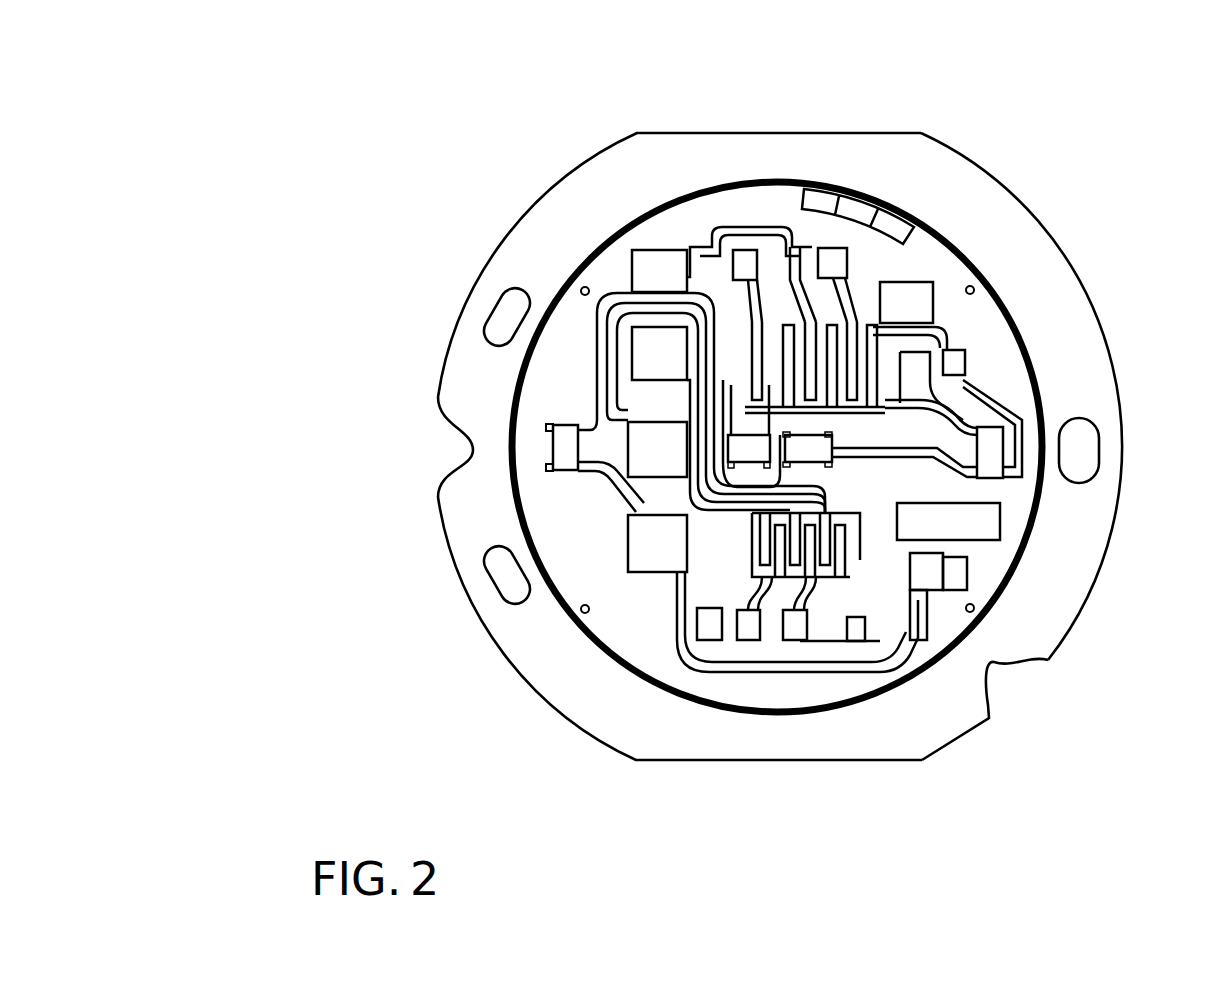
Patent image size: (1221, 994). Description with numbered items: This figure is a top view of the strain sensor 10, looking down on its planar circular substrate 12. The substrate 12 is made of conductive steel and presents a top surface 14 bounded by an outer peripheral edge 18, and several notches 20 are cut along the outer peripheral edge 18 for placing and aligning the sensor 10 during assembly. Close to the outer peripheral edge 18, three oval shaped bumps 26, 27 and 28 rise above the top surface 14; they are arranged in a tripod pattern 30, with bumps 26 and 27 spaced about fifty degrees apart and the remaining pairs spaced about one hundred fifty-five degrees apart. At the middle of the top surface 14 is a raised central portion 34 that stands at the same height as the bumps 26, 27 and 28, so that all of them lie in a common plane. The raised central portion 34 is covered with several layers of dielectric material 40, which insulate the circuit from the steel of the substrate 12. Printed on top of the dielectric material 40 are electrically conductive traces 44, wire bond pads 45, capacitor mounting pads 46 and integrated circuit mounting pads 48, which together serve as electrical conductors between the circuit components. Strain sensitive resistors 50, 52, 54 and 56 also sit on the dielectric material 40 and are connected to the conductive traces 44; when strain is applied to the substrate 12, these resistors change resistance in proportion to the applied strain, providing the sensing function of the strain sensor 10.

The strain sensor 10 is at (318, 101).
The substrate 12 is at (578, 166).
The top surface 14 is at (968, 203).
The outer peripheral edge 18 is at (1057, 237).
The notches 20 is at (996, 668).
The bump 26 is at (484, 578).
The bump 27 is at (493, 305).
The bump 28 is at (1100, 455).
The pattern 30 is at (326, 367).
The raised central portion 34 is at (520, 506).
The dielectric material 40 is at (612, 622).
The conductive traces 44 is at (608, 295).
The wire bond pads 45 is at (650, 552).
The capacitor mounting pads 46 is at (830, 262).
The integrated circuit mounting pads 48 is at (783, 328).
The strain sensitive resistor 50 is at (563, 457).
The strain sensitive resistor 52 is at (763, 460).
The strain sensitive resistor 54 is at (823, 460).
The strain sensitive resistor 56 is at (990, 462).